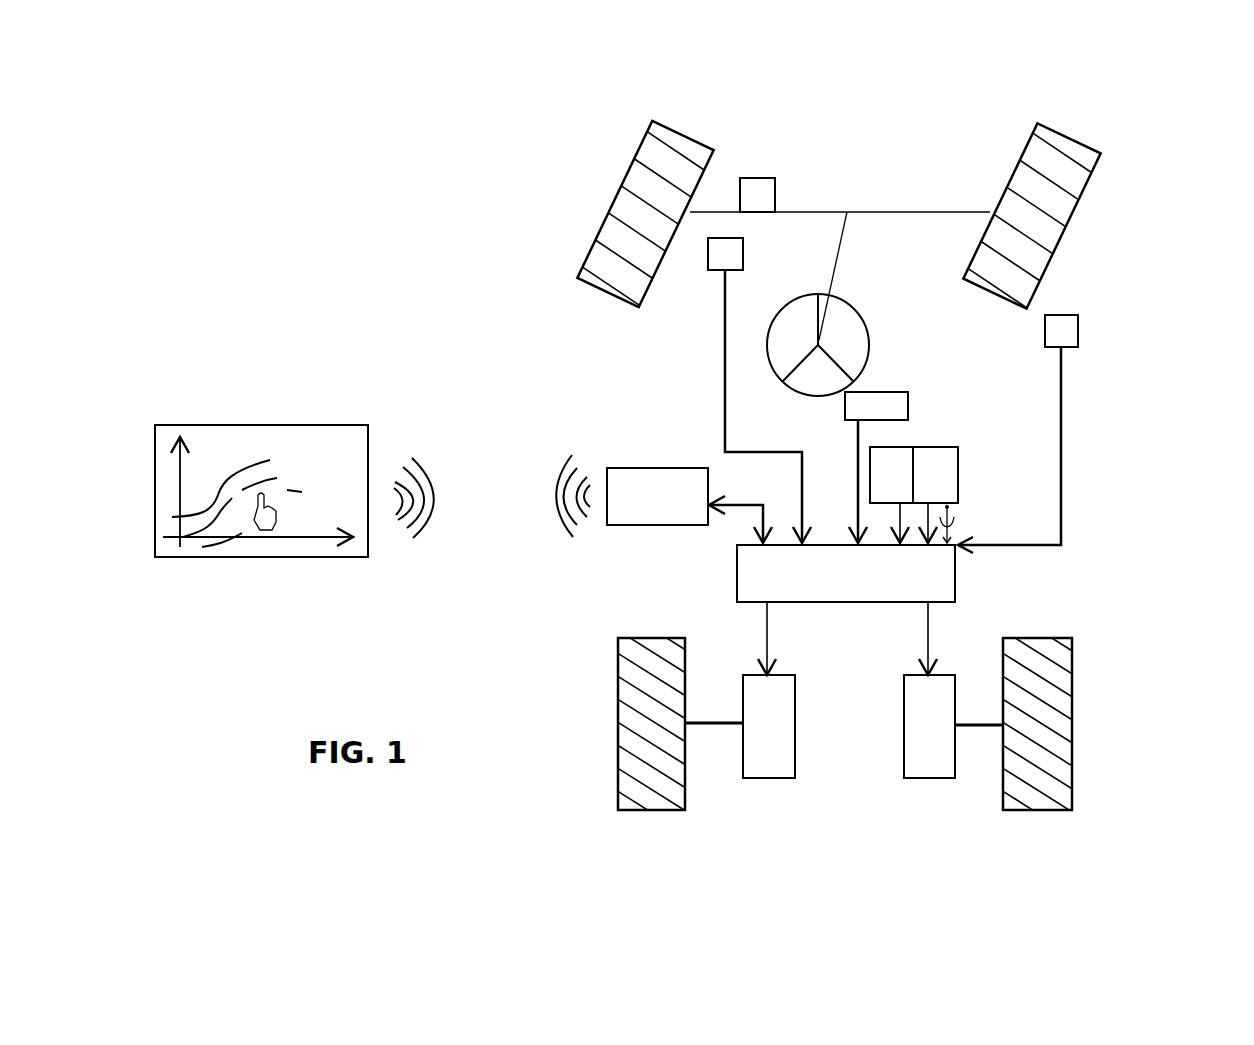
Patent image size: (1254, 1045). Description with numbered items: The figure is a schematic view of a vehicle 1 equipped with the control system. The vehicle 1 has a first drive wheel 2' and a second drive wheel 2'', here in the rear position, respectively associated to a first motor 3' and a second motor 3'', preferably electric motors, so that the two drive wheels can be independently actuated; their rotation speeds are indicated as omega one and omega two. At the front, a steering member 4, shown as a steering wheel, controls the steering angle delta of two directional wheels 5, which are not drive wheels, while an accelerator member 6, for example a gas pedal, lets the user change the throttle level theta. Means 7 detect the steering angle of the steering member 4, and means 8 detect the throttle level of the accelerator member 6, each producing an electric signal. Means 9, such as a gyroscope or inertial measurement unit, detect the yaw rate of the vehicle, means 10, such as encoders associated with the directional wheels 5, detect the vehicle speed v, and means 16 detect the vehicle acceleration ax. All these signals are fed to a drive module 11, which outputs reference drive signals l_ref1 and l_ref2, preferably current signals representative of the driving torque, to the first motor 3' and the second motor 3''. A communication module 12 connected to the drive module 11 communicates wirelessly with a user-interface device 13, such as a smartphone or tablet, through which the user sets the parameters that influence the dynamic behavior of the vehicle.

The vehicle 1 is at (1162, 185).
The first drive wheel 2' is at (650, 756).
The second drive wheel 2'' is at (1037, 750).
The first motor 3' is at (744, 779).
The second motor 3'' is at (953, 779).
The steering member 4 is at (869, 337).
The directional wheels 5 is at (690, 150).
The accelerator member 6 is at (768, 178).
The means for detecting the steering angle 7 is at (895, 404).
The means for detecting the throttle level 8 is at (735, 262).
The means for detecting the yaw rate 9 is at (945, 487).
The means for detecting the speed 10 is at (1066, 332).
The drive module 11 is at (958, 573).
The communication module 12 is at (637, 485).
The user-interface device 13 is at (283, 425).
The means to detect the acceleration 16 is at (893, 472).